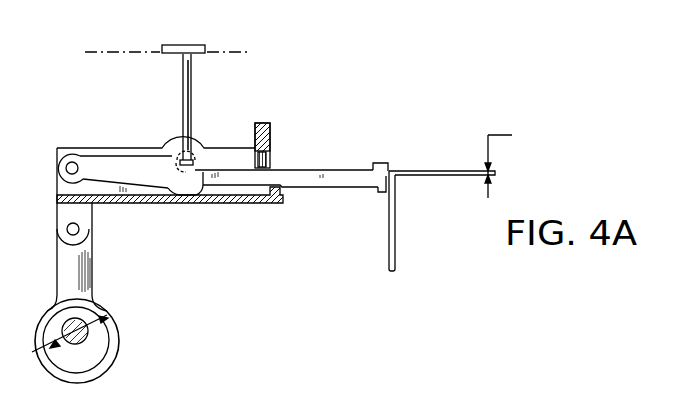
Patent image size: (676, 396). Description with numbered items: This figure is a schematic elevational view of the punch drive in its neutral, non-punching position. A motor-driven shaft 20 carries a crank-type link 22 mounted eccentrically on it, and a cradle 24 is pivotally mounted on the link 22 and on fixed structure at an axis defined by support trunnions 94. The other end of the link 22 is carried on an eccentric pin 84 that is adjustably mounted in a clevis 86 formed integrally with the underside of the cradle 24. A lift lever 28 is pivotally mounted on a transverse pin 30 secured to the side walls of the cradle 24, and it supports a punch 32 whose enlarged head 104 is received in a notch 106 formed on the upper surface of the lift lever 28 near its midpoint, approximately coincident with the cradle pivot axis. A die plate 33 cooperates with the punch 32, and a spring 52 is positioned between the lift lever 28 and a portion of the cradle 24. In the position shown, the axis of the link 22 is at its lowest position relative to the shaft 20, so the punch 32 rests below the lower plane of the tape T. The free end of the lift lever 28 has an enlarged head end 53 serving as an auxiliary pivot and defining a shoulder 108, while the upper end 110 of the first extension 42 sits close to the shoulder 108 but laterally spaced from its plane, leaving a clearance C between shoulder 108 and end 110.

The shaft 20 is at (62, 331).
The link 22 is at (62, 273).
The cradle 24 is at (121, 152).
The lift lever 28 is at (343, 170).
The transverse pin 30 is at (66, 168).
The punch 32 is at (183, 85).
The die plate 33 is at (173, 45).
The first extension 42 is at (395, 253).
The spring 52 is at (271, 164).
The enlarged head end 53 is at (386, 163).
The eccentric pin 84 is at (62, 236).
The clevis 86 is at (62, 212).
The support trunnion 94 is at (192, 160).
The enlarged head 104 is at (197, 180).
The notch 106 is at (183, 177).
The shoulder 108 is at (386, 192).
The upper end 110 is at (397, 181).
The tape T is at (221, 52).
The clearance C is at (508, 160).